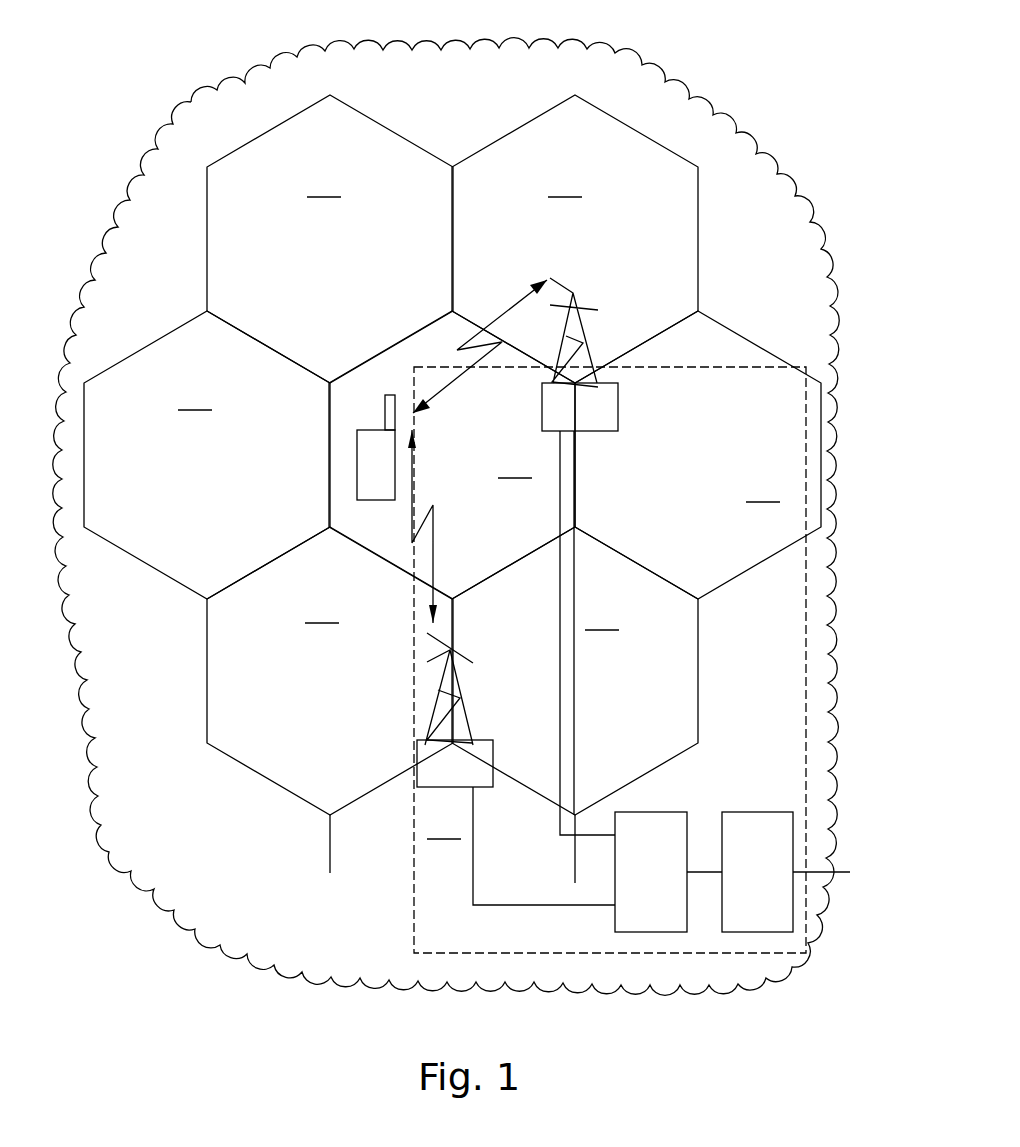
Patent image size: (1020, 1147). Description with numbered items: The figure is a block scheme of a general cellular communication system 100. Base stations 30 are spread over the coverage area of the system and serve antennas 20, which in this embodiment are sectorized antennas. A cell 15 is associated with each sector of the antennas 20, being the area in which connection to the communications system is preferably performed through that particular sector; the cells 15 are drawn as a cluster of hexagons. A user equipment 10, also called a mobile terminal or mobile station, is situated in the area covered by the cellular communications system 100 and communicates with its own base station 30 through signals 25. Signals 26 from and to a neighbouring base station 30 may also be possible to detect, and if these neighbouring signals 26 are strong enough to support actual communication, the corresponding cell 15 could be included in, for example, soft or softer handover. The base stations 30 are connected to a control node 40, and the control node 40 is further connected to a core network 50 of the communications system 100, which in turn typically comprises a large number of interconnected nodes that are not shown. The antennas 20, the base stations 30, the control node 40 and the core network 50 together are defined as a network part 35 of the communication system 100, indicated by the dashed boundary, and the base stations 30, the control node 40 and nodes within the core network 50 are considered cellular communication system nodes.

The cellular communication system 100 is at (625, 68).
The cell 15 is at (452, 489).
The user equipment 10 is at (357, 468).
The antennas 20 is at (573, 293).
The signals 25 is at (508, 310).
The neighbouring signals 26 is at (433, 505).
The base station 30 is at (618, 432).
The network part 35 is at (411, 937).
The control node 40 is at (627, 812).
The core network 50 is at (758, 812).